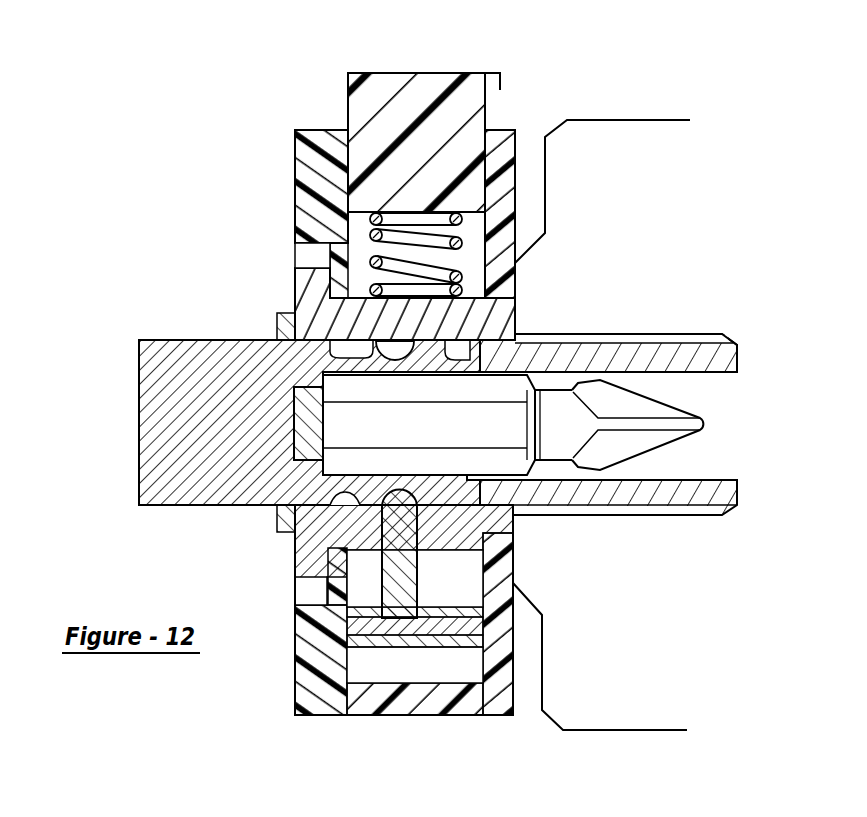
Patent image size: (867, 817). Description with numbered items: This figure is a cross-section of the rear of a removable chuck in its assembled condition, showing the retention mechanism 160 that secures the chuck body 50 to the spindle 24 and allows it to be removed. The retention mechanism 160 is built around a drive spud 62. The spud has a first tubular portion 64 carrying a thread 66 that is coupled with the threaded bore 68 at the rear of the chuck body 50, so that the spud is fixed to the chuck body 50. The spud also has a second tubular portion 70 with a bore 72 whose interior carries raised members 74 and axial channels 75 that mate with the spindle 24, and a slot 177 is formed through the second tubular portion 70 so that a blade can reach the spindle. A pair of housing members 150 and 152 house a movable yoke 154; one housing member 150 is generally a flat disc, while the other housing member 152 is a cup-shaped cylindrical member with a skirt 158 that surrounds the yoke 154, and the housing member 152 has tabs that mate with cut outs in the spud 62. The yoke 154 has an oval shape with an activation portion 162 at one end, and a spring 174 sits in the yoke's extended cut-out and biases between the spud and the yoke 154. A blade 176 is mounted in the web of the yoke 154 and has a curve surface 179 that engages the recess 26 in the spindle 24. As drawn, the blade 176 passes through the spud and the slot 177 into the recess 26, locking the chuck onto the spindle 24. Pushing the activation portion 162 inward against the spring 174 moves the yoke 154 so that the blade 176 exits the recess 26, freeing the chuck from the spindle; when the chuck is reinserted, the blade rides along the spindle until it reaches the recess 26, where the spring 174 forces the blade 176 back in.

The spindle 24 is at (173, 488).
The recess 26 is at (431, 465).
The chuck body 50 is at (673, 120).
The drive spud 62 is at (287, 313).
The first tubular portion 64 is at (724, 360).
The thread 66 is at (672, 338).
The threaded bore 68 is at (615, 337).
The second tubular portion 70 is at (513, 572).
The bore 72 is at (342, 355).
The raised members 74 is at (463, 348).
The axial channels 75 is at (345, 492).
The housing member 150 is at (503, 137).
The housing member 152 is at (330, 133).
The yoke 154 is at (498, 78).
The skirt 158 is at (428, 712).
The retention mechanism 160 is at (226, 119).
The activation portion 162 is at (432, 92).
The spring 174 is at (393, 229).
The blade 176 is at (400, 550).
The slot 177 is at (413, 510).
The curve surface 179 is at (450, 475).